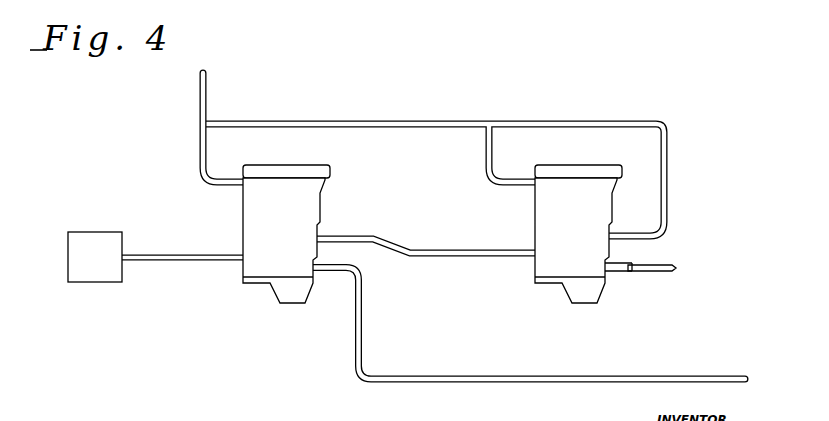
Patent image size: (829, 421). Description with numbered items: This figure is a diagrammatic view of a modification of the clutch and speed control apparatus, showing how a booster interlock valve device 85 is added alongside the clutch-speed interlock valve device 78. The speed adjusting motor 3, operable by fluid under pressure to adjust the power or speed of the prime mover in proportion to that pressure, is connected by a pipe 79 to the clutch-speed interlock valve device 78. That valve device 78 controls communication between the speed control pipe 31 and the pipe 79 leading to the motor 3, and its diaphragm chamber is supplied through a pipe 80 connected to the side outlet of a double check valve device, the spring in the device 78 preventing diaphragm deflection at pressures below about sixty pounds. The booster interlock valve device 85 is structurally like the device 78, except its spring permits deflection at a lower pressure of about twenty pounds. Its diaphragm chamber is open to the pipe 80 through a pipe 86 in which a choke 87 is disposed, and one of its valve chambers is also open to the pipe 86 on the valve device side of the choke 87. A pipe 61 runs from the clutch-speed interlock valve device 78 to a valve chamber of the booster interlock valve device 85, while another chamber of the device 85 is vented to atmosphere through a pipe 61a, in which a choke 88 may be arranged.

The speed adjusting motor 3 is at (96, 274).
The speed control pipe 31 is at (716, 356).
The pipe 61 is at (405, 250).
The pipe 61a is at (622, 271).
The clutch-speed interlock valve device 78 is at (303, 163).
The pipe 79 is at (203, 238).
The pipe 80 is at (206, 78).
The booster interlock valve device 85 is at (595, 140).
The pipe 86 is at (340, 100).
The choke 87 is at (440, 123).
The choke 88 is at (640, 271).